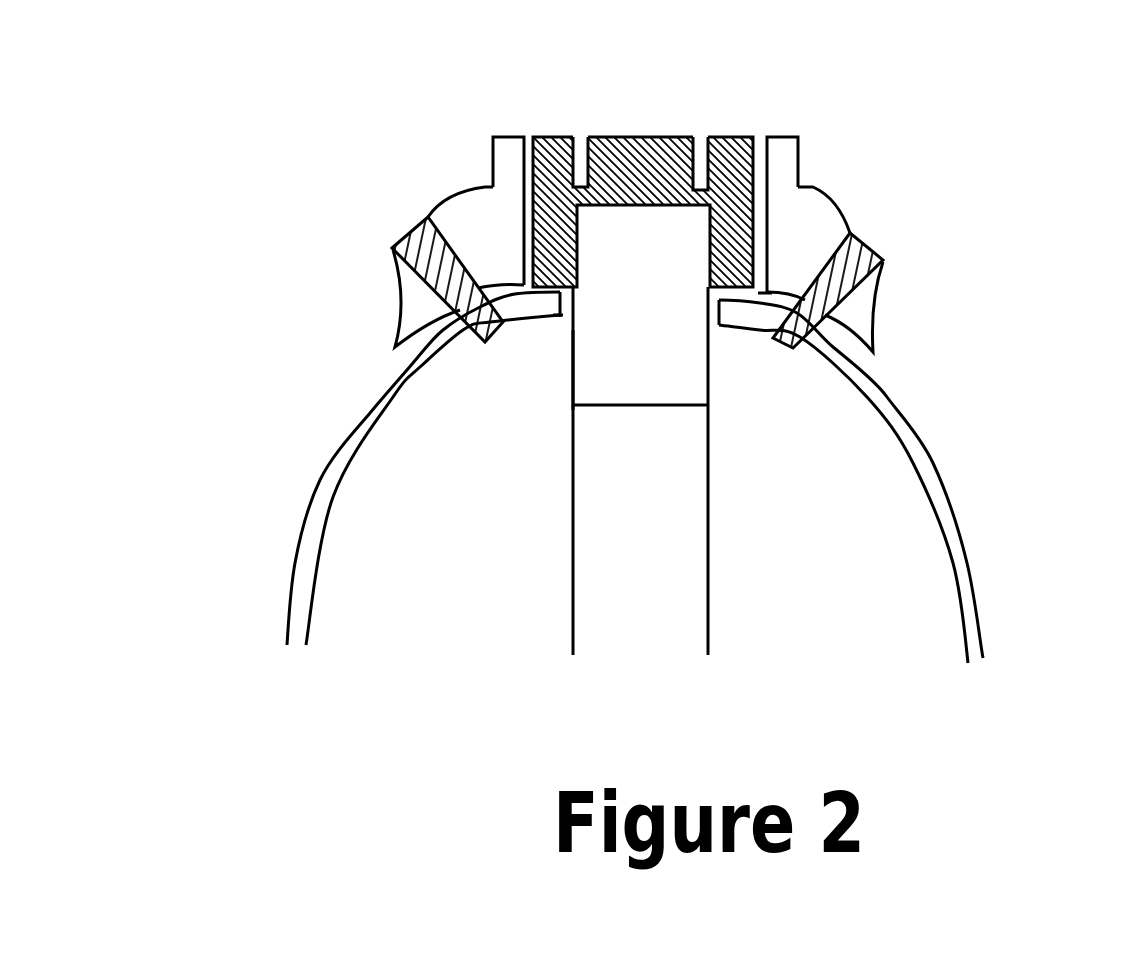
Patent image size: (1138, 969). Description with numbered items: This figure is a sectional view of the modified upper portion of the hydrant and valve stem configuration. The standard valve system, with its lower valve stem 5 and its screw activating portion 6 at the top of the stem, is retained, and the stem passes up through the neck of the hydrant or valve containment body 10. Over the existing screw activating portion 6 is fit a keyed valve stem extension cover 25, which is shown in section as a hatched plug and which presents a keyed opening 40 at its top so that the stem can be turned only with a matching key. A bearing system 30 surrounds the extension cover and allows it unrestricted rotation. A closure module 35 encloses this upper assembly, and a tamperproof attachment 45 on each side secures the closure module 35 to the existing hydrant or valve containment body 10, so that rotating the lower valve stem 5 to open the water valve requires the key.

The lower valve stem 5 is at (707, 572).
The screw activating portion 6 is at (570, 370).
The hydrant or valve containment body 10 is at (908, 410).
The keyed valve stem extension cover 25 is at (642, 137).
The bearing system 30 is at (760, 137).
The closure module 35 is at (810, 212).
The keyed opening 40 is at (703, 137).
The tamperproof attachment 45 is at (884, 258).